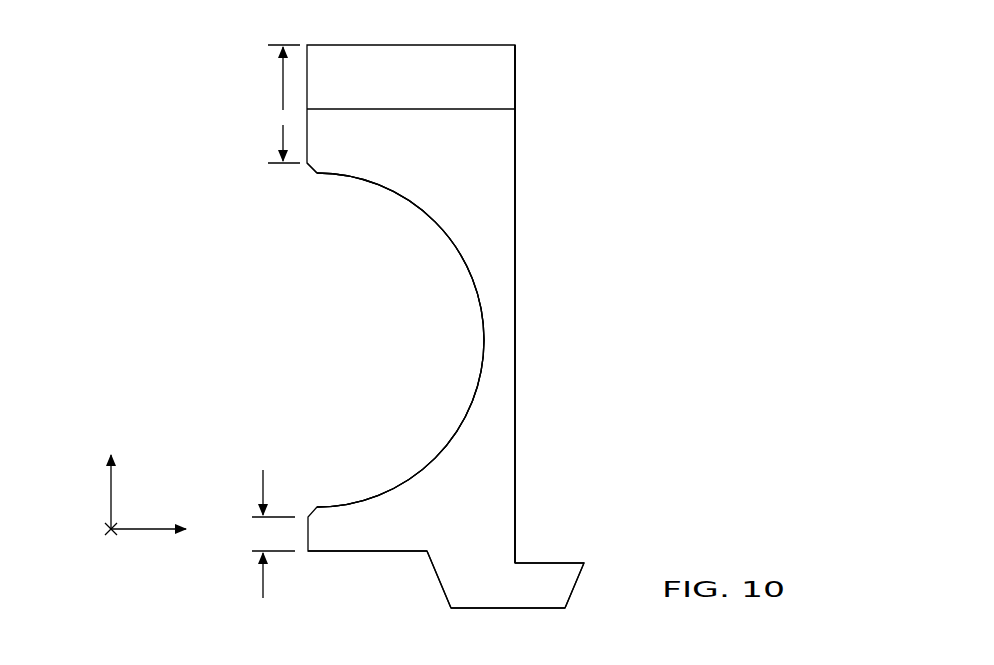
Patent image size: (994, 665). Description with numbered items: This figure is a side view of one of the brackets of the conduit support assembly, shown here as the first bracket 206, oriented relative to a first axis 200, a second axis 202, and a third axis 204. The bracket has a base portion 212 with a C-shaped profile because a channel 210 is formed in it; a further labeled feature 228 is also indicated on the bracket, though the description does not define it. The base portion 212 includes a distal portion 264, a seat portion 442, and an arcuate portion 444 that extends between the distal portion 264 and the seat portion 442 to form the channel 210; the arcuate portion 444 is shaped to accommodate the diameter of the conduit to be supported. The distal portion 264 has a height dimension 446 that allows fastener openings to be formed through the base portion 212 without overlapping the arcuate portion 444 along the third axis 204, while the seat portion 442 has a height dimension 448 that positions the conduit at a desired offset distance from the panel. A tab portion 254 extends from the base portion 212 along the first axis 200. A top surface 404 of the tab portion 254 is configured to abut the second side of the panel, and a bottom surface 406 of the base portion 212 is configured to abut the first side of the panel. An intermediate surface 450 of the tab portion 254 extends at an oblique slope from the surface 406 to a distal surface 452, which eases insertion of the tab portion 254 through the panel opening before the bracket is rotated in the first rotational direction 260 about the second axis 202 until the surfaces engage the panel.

The first bracket 206 is at (208, 70).
The dimension of distal portion 446 is at (283, 104).
The distal portion 264 is at (295, 186).
The arcuate portion 444 is at (440, 245).
The channel 210 is at (356, 364).
The seat portion 442 is at (302, 505).
The dimension of seat portion 448 is at (262, 580).
The surface of base portion 406 is at (372, 553).
The surface of tab portion 450 is at (437, 582).
The distal surface of tab portion 452 is at (553, 614).
The surface of tab portion 404 is at (551, 562).
The tab portion 254 is at (560, 581).
The first rotational direction 260 is at (579, 138).
The base portion 212 is at (611, 174).
The outer side wall 228 is at (601, 422).
The third axis 204 is at (111, 495).
The first axis 200 is at (145, 529).
The second axis 202 is at (106, 533).